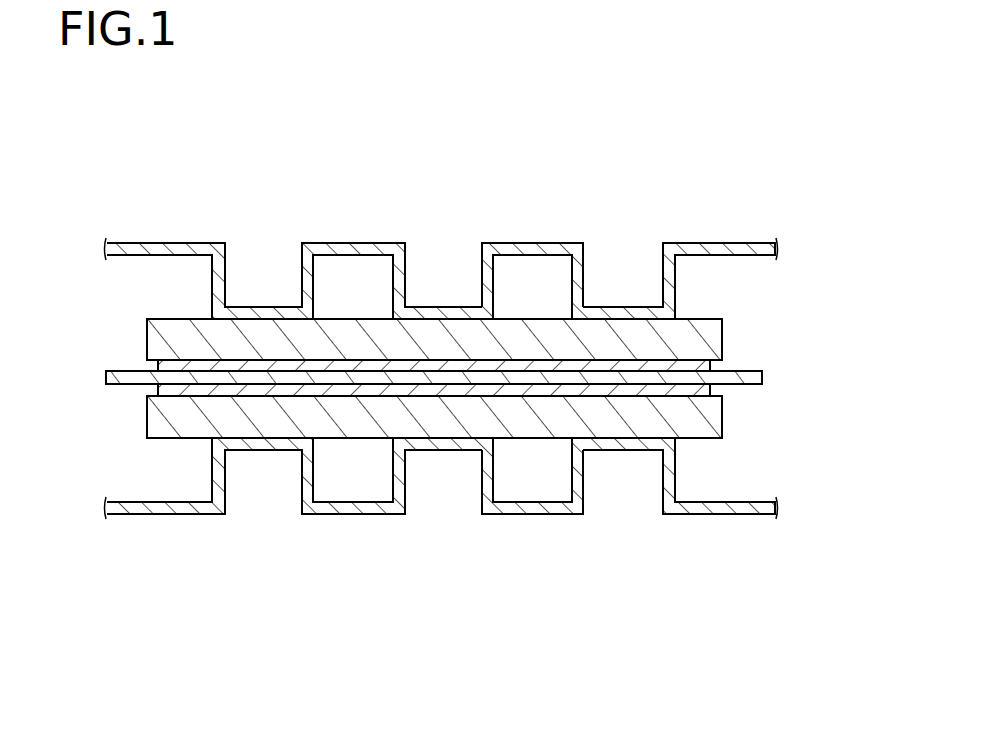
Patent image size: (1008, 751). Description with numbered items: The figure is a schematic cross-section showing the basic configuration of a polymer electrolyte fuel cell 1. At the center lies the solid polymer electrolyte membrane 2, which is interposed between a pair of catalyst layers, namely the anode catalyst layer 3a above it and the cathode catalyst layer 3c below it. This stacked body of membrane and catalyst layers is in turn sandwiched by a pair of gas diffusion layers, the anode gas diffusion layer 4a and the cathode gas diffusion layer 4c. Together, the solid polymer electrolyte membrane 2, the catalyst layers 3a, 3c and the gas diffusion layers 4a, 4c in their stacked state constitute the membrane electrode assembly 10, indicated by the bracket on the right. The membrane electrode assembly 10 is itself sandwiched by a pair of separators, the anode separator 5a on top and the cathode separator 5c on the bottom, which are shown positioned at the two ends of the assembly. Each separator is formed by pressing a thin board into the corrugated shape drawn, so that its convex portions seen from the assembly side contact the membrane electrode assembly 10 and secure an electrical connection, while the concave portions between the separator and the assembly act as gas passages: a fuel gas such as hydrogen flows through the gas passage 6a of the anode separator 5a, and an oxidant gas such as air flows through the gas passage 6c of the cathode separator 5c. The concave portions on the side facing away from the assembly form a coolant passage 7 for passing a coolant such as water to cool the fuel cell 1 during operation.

The polymer electrolyte fuel cell 1 is at (105, 139).
The solid polymer electrolyte membrane 2 is at (763, 378).
The anode catalyst layer 3a is at (711, 368).
The cathode catalyst layer 3c is at (711, 389).
The anode gas diffusion layer 4a is at (723, 321).
The cathode gas diffusion layer 4c is at (723, 425).
The anode separator 5a is at (676, 278).
The cathode separator 5c is at (676, 475).
The gas passage 6a is at (501, 270).
The gas passage 6c is at (502, 480).
The coolant passage 7 is at (587, 277).
The membrane electrode assembly 10 is at (490, 380).